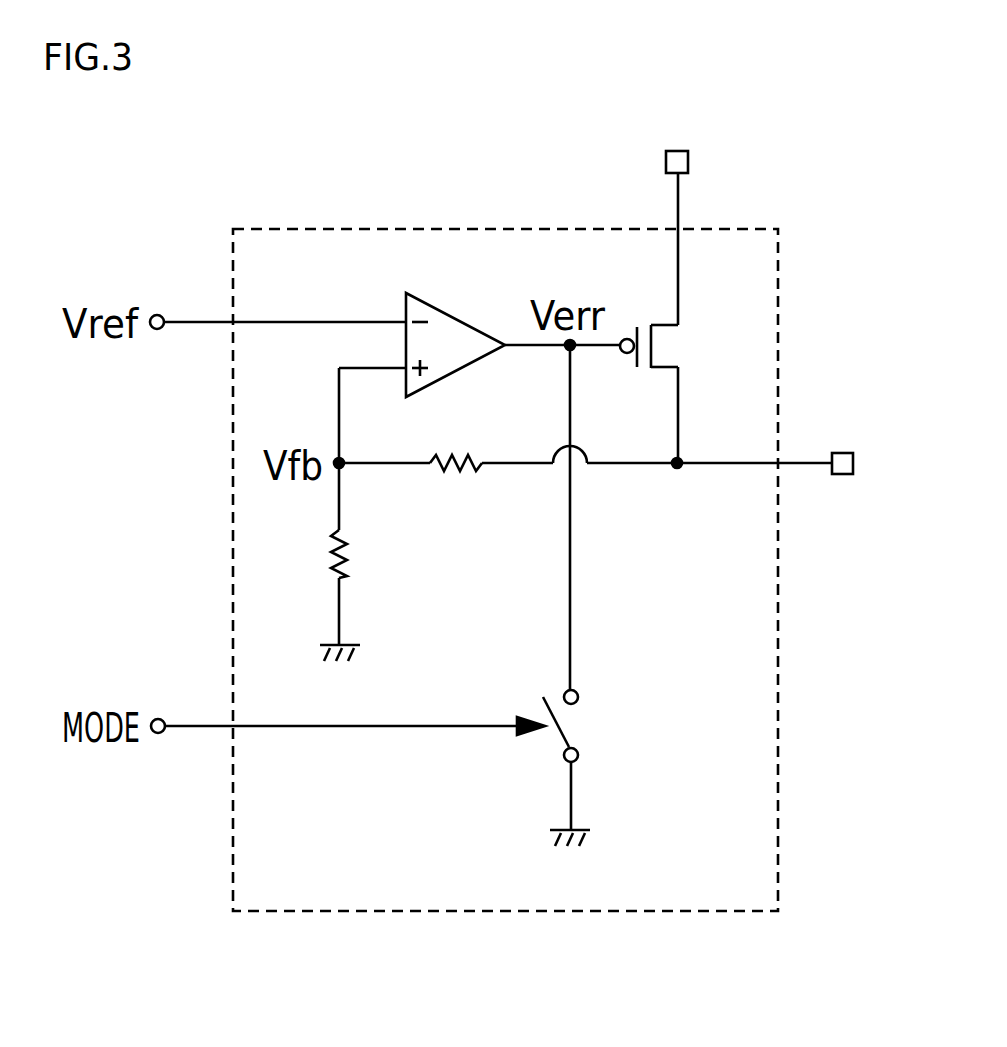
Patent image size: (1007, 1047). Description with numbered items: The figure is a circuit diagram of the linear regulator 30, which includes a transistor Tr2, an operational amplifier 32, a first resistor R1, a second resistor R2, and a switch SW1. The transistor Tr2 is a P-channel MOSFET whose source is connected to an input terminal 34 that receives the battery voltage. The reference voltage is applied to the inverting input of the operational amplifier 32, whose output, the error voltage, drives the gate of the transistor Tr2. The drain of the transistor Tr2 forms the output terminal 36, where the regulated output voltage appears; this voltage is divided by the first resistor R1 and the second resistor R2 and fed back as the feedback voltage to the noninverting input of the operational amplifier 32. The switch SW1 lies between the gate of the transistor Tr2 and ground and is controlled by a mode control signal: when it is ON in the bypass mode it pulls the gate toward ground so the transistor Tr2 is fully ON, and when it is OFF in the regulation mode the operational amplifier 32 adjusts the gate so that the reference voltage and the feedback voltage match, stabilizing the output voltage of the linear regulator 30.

The linear regulator 30 is at (503, 911).
The operational amplifier 32 is at (459, 313).
The input terminal 34 is at (688, 161).
The output terminal 36 is at (842, 474).
The transistor Tr2 is at (682, 318).
The switch SW1 is at (580, 726).
The first resistor R1 is at (315, 520).
The second resistor R2 is at (456, 490).